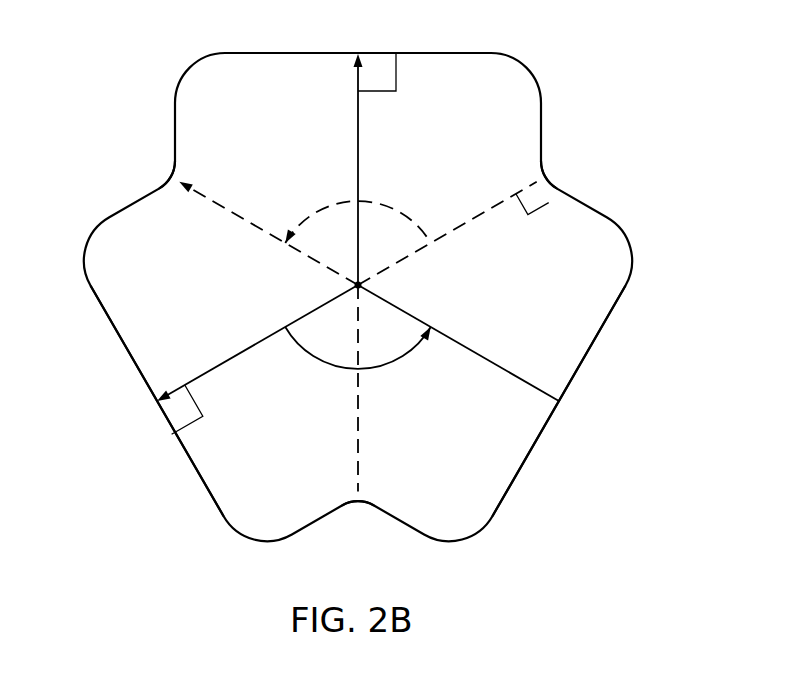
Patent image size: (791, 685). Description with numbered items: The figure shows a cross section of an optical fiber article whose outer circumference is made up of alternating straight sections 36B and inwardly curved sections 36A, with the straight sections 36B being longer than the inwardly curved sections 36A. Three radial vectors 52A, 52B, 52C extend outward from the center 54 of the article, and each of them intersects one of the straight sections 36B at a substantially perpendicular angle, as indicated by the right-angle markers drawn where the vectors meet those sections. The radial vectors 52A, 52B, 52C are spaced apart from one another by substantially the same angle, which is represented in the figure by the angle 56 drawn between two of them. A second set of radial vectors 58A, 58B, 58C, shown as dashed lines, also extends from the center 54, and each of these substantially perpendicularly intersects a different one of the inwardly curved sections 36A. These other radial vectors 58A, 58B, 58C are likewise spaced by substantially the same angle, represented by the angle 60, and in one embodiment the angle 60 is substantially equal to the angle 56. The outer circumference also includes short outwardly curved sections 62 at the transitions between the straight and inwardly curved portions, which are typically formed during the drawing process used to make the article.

The inwardly curved section 36A is at (134, 176).
The straight section 36B is at (318, 44).
The radial vector 52A is at (362, 126).
The radial vector 52B is at (222, 362).
The radial vector 52C is at (482, 358).
The center 54 is at (354, 287).
The angle 56 is at (378, 368).
The other radial vector 58A is at (235, 213).
The other radial vector 58B is at (352, 398).
The other radial vector 58C is at (470, 220).
The angle 60 is at (352, 200).
The outwardly curved section 62 is at (245, 550).